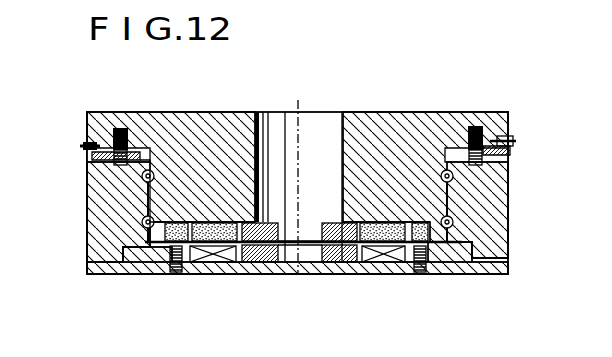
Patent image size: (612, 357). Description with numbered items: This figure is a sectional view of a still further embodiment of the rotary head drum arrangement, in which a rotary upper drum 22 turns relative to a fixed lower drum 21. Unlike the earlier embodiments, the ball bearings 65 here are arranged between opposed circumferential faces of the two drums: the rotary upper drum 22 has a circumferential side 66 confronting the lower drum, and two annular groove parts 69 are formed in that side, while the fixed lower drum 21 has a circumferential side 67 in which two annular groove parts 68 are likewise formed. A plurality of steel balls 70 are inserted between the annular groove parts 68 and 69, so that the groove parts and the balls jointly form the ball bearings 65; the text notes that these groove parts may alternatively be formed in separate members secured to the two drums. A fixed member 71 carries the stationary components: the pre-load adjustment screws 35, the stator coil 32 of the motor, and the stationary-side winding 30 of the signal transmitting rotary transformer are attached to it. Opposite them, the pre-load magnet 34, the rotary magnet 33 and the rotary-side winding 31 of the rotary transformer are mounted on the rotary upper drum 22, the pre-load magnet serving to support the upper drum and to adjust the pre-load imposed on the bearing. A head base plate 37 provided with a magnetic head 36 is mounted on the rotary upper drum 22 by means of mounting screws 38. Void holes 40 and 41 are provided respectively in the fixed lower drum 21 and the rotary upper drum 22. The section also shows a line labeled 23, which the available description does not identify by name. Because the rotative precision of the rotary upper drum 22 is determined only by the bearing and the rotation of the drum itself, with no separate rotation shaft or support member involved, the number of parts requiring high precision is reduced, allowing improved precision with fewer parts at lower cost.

The fixed lower drum 21 is at (488, 230).
The rotary upper drum 22 is at (443, 122).
The spindle axis 23 is at (297, 127).
The stationary-side winding 30 is at (332, 265).
The rotary-side winding 31 is at (240, 172).
The stator coil 32 is at (382, 260).
The rotary magnet 33 is at (368, 222).
The pre-load magnet 34 is at (417, 222).
The pre-load adjustment screws 35 is at (416, 256).
The magnetic head 36 is at (500, 145).
The head base plate 37 is at (503, 148).
The mounting screws 38 is at (477, 177).
The void hole 40 is at (312, 260).
The void hole 41 is at (322, 140).
The ball bearings 65 is at (158, 170).
The circumferential side 66 is at (102, 223).
The circumferential side 67 is at (152, 195).
The annular groove parts 68 is at (143, 178).
The annular groove parts 69 is at (163, 170).
The steel balls 70 is at (143, 164).
The fixed member 71 is at (450, 262).